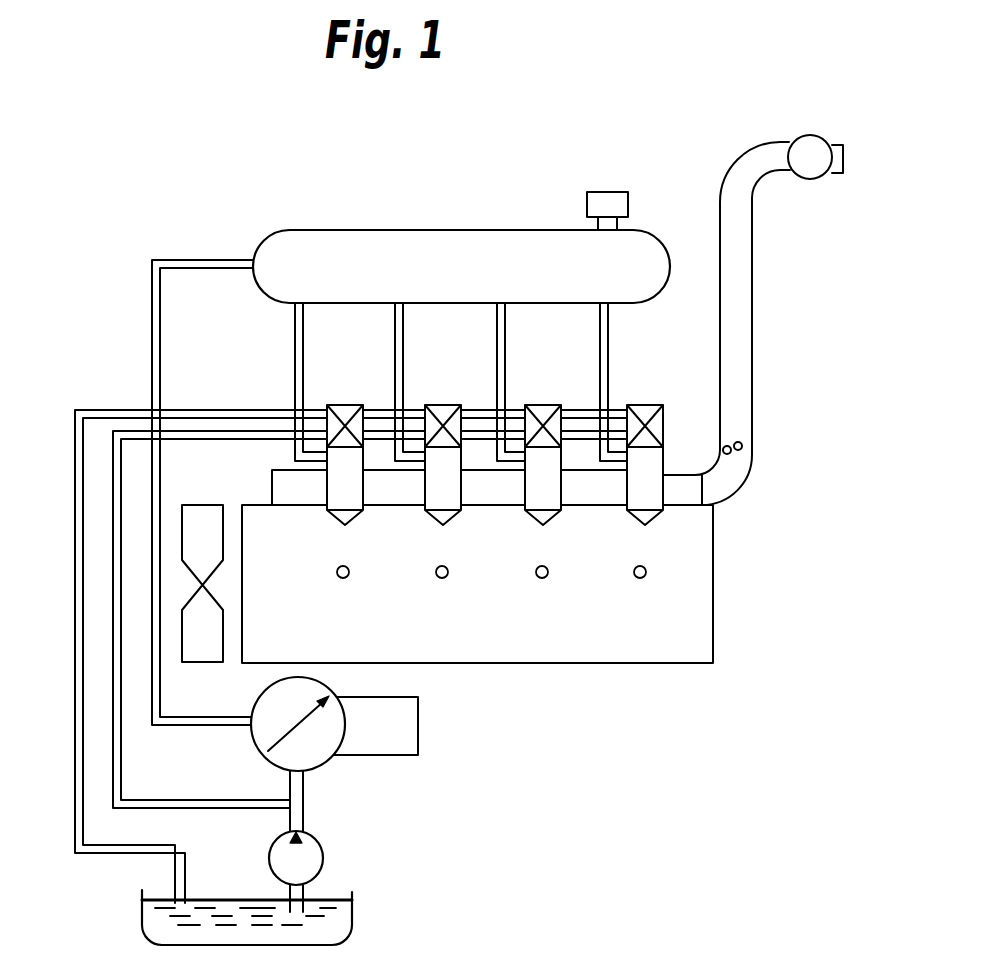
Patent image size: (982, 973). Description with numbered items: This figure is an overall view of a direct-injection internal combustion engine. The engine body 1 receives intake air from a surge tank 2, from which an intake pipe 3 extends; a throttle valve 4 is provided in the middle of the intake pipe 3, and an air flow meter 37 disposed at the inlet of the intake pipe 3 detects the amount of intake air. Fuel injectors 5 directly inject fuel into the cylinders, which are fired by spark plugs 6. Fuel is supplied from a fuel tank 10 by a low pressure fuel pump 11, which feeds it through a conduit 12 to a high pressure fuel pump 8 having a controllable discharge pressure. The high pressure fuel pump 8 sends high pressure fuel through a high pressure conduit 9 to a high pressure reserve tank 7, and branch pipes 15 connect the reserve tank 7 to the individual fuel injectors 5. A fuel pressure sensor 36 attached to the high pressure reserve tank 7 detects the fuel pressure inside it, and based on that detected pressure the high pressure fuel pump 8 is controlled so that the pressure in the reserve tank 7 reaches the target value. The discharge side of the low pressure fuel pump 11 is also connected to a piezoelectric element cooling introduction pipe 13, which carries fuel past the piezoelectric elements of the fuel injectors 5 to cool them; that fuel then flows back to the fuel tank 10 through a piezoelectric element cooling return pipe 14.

The engine body 1 is at (716, 656).
The surge tank 2 is at (689, 508).
The intake pipe 3 is at (752, 270).
The throttle valve 4 is at (746, 448).
The fuel injectors 5 is at (343, 507).
The spark plugs 6 is at (340, 578).
The high pressure reserve tank 7 is at (376, 229).
The high pressure fuel pump 8 is at (340, 760).
The high pressure conduit 9 is at (161, 328).
The fuel tank 10 is at (353, 905).
The low pressure fuel pump 11 is at (323, 860).
The conduit 12 is at (304, 815).
The piezoelectric element cooling introduction pipe 13 is at (259, 428).
The piezoelectric element cooling return pipe 14 is at (113, 408).
The branch pipes 15 is at (303, 330).
The fuel pressure sensor 36 is at (614, 191).
The air flow meter 37 is at (809, 135).